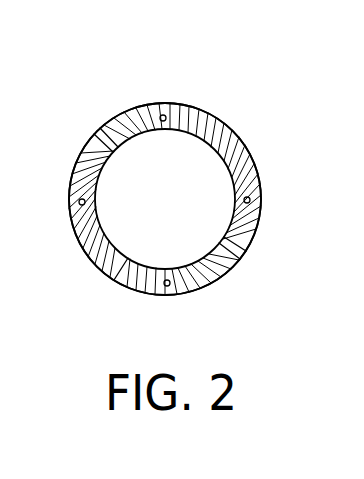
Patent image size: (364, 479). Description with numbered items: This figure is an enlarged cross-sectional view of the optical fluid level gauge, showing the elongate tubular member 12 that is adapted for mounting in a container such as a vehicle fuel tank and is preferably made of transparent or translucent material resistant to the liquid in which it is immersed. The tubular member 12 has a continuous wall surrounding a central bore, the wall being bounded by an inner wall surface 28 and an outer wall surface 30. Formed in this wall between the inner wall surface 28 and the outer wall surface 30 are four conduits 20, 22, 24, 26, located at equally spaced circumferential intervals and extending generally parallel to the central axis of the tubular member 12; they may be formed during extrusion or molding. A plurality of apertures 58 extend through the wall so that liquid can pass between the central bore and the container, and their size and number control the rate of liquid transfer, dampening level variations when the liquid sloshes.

The tubular member 12 is at (122, 115).
The conduit 20 is at (164, 115).
The conduit 22 is at (250, 200).
The conduit 24 is at (169, 286).
The conduit 26 is at (79, 202).
The inner wall surface 28 is at (226, 170).
The outer wall surface 30 is at (262, 173).
The aperture 58 is at (105, 142).